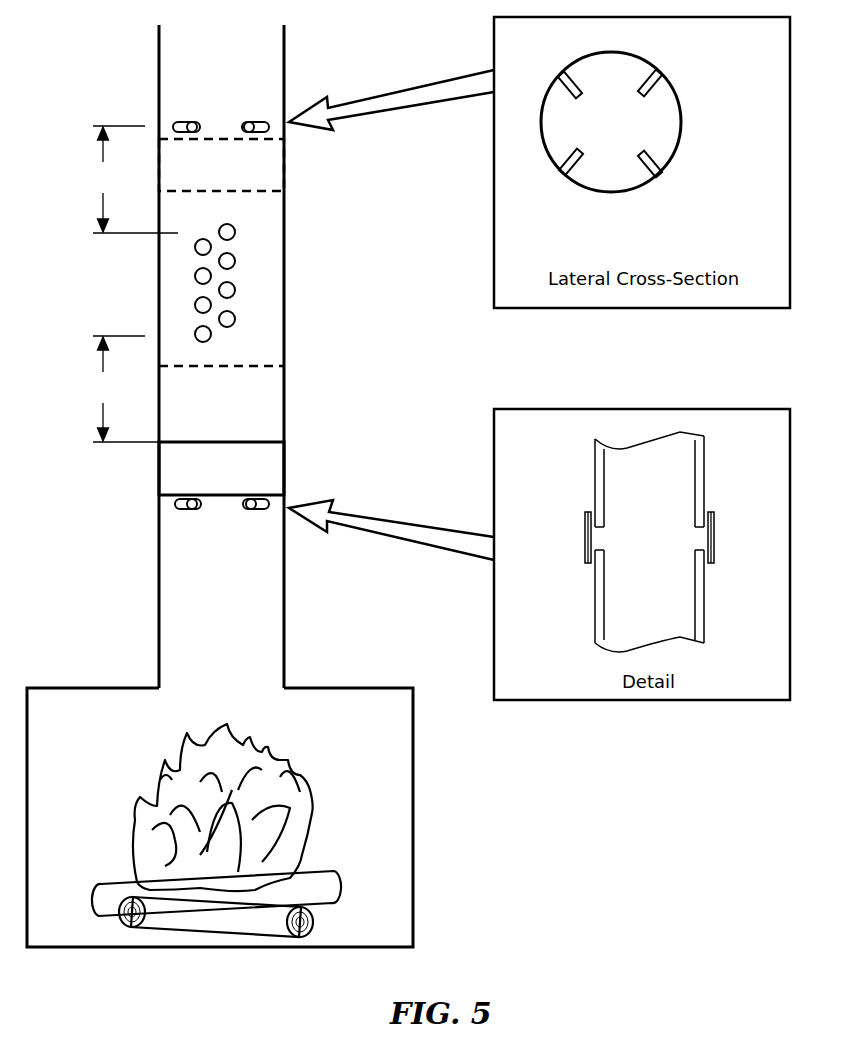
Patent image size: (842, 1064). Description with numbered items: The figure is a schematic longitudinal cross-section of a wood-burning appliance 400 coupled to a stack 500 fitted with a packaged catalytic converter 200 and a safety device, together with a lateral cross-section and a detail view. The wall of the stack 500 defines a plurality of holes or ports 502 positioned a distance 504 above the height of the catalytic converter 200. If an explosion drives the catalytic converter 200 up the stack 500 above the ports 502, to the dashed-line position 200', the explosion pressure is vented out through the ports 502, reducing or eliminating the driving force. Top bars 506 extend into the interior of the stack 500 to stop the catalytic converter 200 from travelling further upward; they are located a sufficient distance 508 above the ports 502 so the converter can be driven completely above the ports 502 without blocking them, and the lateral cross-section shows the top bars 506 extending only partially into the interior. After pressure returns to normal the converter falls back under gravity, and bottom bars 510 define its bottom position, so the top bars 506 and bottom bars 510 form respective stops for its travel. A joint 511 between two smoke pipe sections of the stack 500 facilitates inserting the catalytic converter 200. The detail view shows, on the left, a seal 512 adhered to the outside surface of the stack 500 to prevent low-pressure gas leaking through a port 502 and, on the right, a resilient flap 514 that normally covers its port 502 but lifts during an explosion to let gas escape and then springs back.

The stack 500 is at (284, 605).
The fire box / stove with fire 400 is at (413, 766).
The catalytic converter (driven position) 200' is at (259, 165).
The catalytic converter 200 is at (256, 468).
The joint 511 is at (252, 368).
The top bars 506 is at (250, 122).
The bottom bars 510 is at (248, 510).
The holes (ports) 502 is at (211, 276).
The distance 508 is at (132, 179).
The distance 504 is at (122, 389).
The seal 512 is at (585, 543).
The resilient flap 514 is at (714, 538).